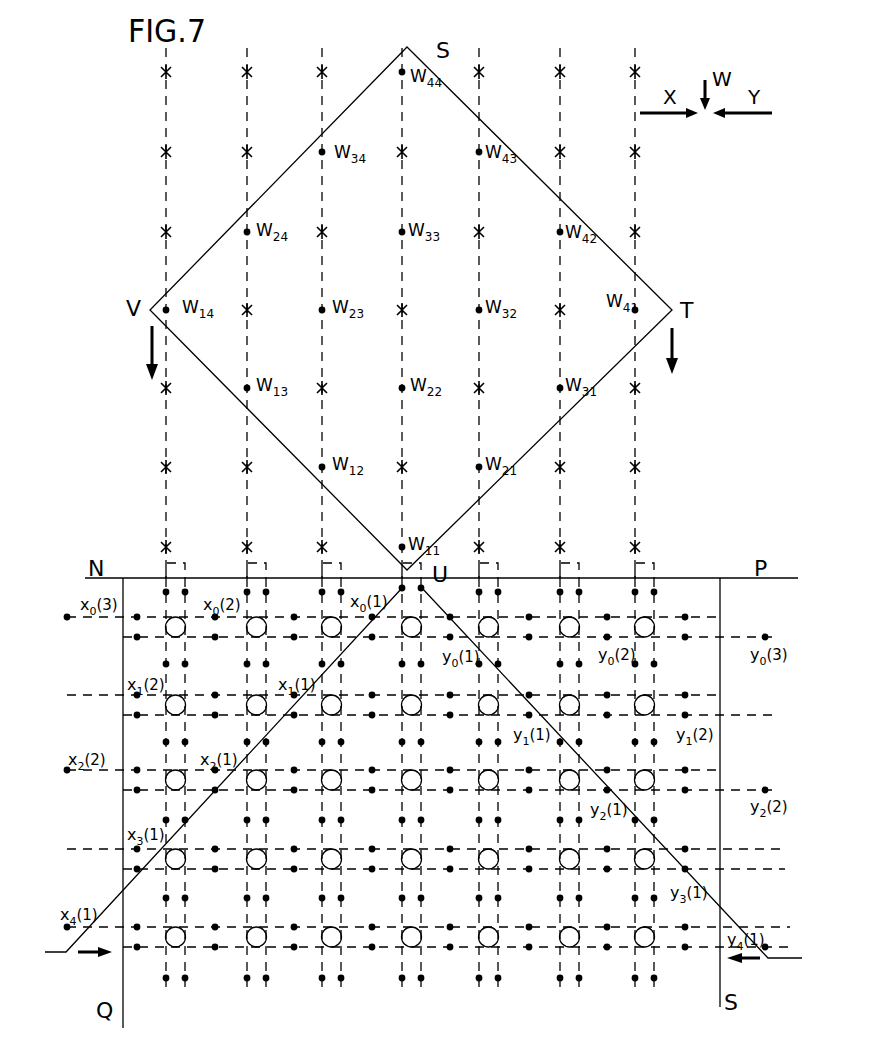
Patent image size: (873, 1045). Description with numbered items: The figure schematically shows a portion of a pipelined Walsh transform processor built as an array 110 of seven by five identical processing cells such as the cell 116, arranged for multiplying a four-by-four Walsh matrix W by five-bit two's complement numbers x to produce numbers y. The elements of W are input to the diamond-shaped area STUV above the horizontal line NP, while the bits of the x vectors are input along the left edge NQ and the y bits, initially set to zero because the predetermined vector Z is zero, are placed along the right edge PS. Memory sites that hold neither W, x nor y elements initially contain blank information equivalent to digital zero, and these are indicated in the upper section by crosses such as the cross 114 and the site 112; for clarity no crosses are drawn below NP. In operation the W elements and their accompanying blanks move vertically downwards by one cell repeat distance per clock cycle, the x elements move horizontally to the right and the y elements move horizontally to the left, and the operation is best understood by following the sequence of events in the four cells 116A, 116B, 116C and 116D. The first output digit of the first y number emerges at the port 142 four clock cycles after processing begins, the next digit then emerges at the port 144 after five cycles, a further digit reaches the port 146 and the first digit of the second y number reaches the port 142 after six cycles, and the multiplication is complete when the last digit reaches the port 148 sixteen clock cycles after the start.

The array of processing cells 110 is at (666, 568).
The lattice point (star) of the skewed processing array 112 is at (484, 227).
The cross indicating blank memory site 114 is at (641, 456).
The processing cell 116 is at (651, 945).
The processing cell 116A is at (408, 631).
The processing cell 116B is at (487, 626).
The processing cell 116C is at (568, 631).
The processing cell 116D is at (648, 630).
The port 142 is at (121, 639).
The port 144 is at (121, 717).
The port 146 is at (121, 792).
The port 148 is at (126, 957).